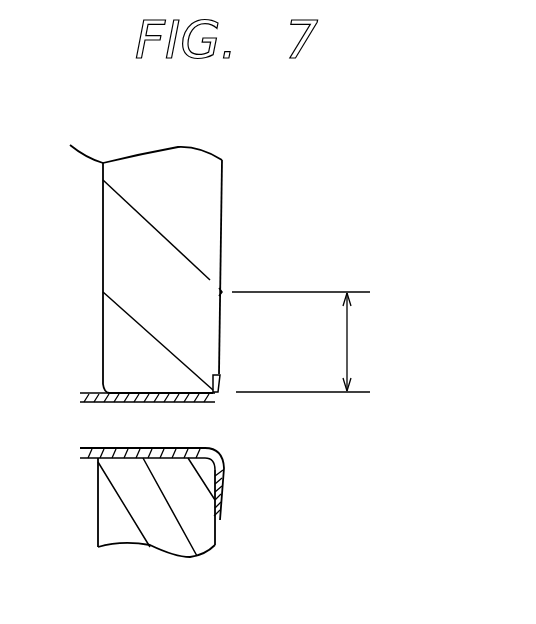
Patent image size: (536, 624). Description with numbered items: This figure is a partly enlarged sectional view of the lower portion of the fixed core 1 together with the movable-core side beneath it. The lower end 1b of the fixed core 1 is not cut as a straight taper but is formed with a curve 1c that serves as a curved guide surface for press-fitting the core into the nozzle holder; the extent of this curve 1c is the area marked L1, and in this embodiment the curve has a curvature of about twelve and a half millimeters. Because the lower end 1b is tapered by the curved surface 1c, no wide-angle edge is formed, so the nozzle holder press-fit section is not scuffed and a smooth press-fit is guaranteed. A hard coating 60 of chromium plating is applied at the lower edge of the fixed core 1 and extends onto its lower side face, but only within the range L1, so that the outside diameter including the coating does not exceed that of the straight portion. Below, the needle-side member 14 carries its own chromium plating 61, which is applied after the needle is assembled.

The fixed core 1 is at (222, 204).
The curve (curved guide surface) 1c is at (252, 300).
The lower end of fixed core 1b is at (222, 340).
The area of curve L1 is at (310, 342).
The hard coating (chromium plating) 60 is at (215, 402).
The chromium plating 61 is at (225, 470).
The substrate 14 is at (205, 532).